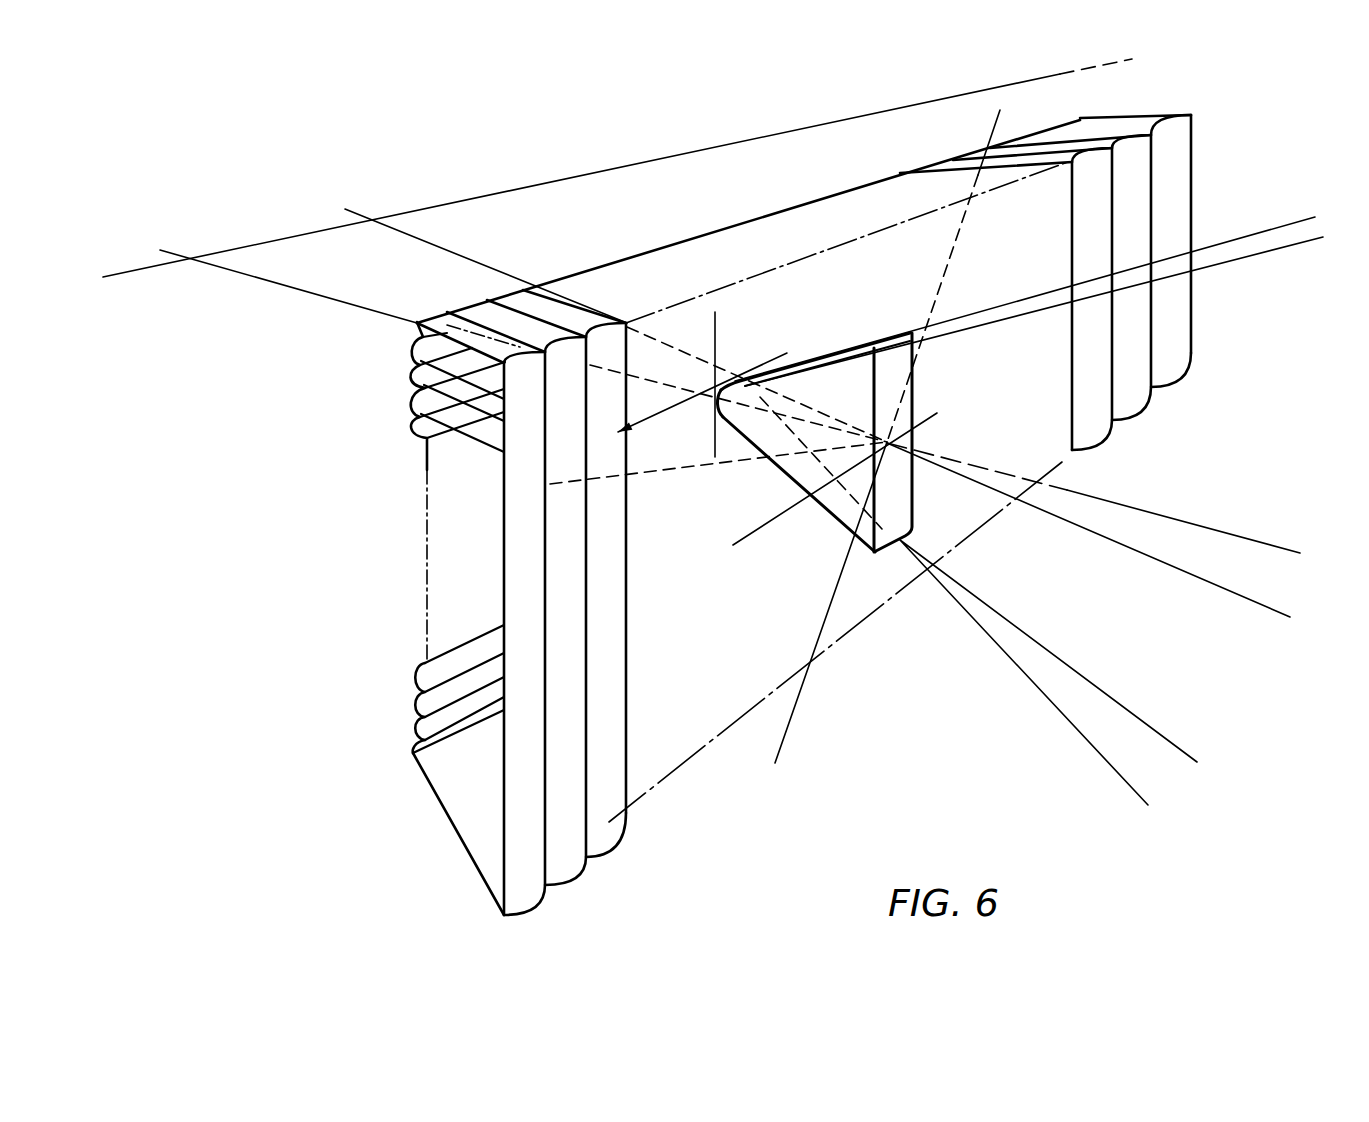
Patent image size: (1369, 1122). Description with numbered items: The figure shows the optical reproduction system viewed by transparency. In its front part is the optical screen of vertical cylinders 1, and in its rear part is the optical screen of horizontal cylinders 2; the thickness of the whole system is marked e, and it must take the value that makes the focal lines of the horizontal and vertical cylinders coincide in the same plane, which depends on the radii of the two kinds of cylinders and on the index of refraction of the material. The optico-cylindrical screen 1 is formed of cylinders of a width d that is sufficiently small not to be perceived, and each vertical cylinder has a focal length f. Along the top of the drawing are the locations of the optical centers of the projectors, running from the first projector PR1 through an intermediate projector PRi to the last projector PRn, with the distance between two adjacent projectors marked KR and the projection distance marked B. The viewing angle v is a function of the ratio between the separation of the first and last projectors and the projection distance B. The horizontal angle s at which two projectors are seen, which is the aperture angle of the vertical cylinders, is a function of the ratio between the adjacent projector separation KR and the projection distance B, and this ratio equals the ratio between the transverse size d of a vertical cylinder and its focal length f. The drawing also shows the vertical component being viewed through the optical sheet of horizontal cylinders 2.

The optical screen of vertical cylinders 1 is at (607, 783).
The optical screen of horizontal cylinders 2 is at (412, 697).
The projection distance B is at (742, 538).
The width of the cylinder d is at (911, 333).
The thickness of the system e is at (504, 915).
The focal length of the vertical cylinders f is at (790, 501).
The viewing angle v is at (798, 707).
The horizontal angle at which two projectors are seen s is at (213, 520).
The distance between two adjacent projectors KR is at (345, 209).
The location of the optical center of a projector PRi is at (253, 213).
The location of the optical center of the last projector PRn is at (966, 79).
The location of the optical center of the first projector PR1 is at (1198, 413).